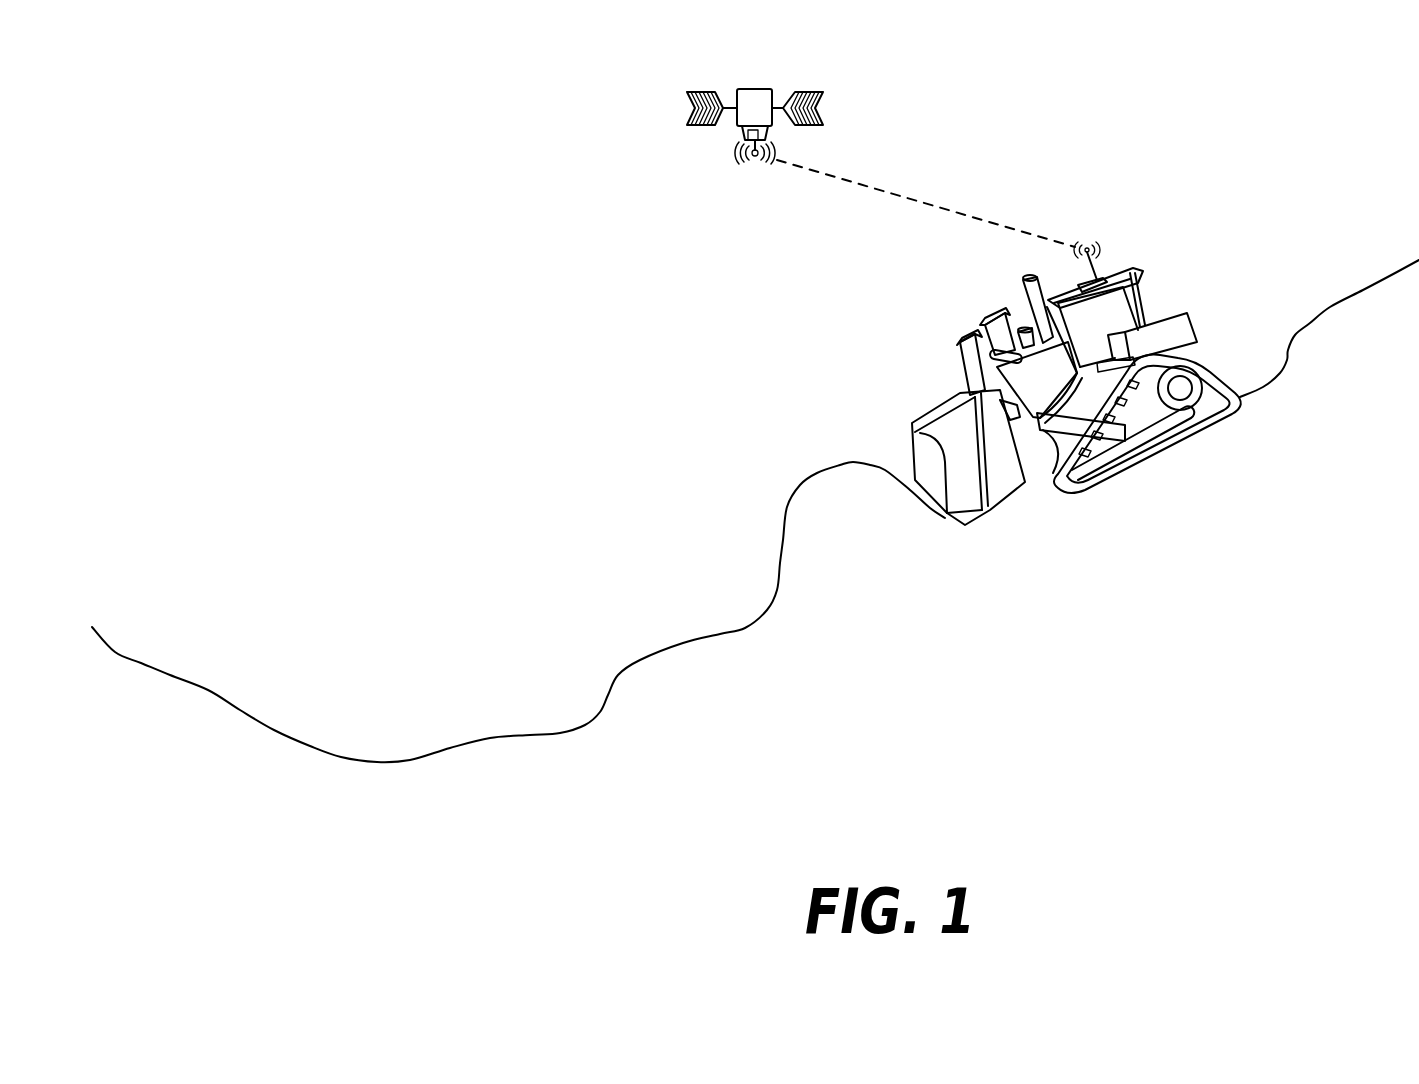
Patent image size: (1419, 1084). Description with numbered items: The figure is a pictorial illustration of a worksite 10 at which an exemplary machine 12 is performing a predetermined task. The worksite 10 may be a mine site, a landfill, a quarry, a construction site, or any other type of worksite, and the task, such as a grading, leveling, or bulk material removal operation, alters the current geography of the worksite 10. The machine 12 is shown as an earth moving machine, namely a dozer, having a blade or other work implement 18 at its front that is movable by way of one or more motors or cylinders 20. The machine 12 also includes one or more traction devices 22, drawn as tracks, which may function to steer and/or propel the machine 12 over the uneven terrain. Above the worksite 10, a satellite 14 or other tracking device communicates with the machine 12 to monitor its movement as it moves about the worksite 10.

The worksite 10 is at (268, 403).
The machine 12 is at (1042, 376).
The satellite 14 is at (850, 102).
The work implement 18 is at (882, 450).
The cylinders 20 is at (1047, 487).
The traction devices 22 is at (1248, 373).